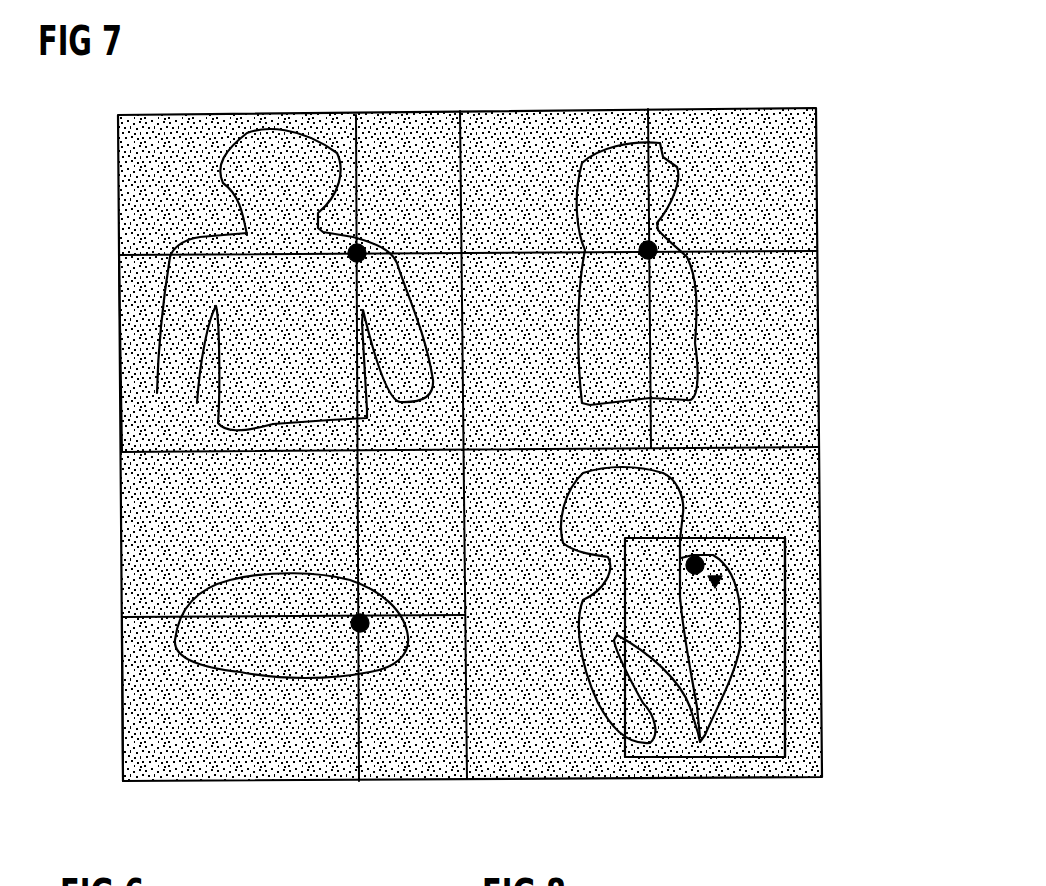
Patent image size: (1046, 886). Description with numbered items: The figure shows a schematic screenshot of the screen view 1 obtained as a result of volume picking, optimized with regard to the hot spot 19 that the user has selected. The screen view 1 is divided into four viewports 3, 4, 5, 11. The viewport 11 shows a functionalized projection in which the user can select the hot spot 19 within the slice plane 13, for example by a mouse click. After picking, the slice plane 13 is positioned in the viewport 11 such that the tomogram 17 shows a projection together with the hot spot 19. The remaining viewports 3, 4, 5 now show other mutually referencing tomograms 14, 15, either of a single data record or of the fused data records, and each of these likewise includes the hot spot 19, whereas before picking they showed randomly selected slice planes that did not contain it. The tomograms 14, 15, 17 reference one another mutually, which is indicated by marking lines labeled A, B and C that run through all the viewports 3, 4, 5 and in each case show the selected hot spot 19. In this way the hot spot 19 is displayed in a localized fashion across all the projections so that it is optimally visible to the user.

The screen view 1 is at (103, 227).
The viewport 3 is at (131, 358).
The viewport 4 is at (132, 688).
The viewport 5 is at (740, 107).
The viewport 11 is at (783, 777).
The slice plane 13 is at (770, 527).
The tomogram 14 is at (247, 127).
The tomogram 15 is at (263, 675).
The tomogram 17 is at (785, 671).
The hot spot 19 is at (722, 585).